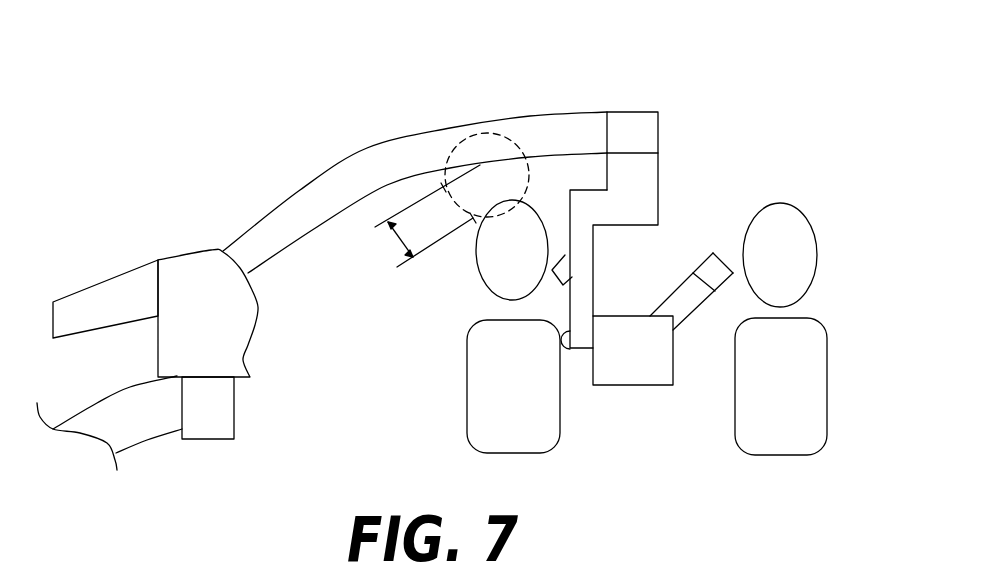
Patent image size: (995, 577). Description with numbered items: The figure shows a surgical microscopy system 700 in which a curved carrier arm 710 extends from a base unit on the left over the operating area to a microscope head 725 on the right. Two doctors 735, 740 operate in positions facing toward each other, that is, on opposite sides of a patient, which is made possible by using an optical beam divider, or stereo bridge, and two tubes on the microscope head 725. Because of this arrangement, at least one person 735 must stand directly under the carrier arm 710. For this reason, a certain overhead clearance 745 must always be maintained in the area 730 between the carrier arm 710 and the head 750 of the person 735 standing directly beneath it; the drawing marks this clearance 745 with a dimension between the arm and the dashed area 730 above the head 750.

The surgical microscopy system 700 is at (226, 93).
The carrier arm 710 is at (372, 153).
The area 730 is at (515, 147).
The overhead clearance 745 is at (397, 233).
The doctor 735 is at (467, 378).
The head 750 is at (478, 253).
The microscope head 725 is at (623, 385).
The doctor 740 is at (808, 372).